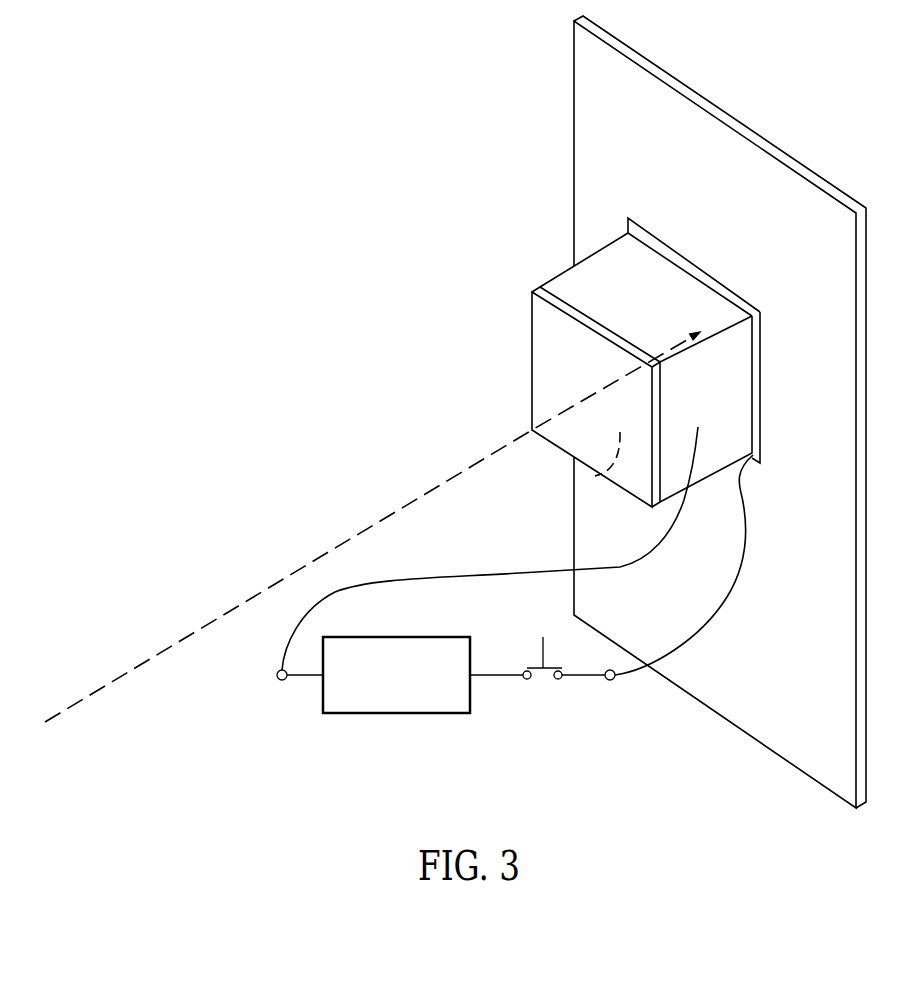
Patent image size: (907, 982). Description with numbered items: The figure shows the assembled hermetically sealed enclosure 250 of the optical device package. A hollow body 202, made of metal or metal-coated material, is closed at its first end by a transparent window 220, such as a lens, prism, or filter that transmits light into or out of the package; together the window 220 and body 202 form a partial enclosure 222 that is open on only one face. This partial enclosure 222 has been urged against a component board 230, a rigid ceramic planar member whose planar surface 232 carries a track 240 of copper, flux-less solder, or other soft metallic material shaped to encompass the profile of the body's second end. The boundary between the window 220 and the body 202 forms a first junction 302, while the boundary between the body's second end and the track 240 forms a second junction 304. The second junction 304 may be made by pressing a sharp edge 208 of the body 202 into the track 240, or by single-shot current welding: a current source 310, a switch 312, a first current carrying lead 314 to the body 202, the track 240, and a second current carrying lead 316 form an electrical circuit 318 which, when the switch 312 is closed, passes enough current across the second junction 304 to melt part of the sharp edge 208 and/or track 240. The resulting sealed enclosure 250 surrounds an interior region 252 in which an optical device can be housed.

The hollow body 202 is at (577, 347).
The sharp edge 208 is at (764, 432).
The window 220 is at (566, 388).
The partial enclosure 222 is at (531, 392).
The component board 230 is at (684, 414).
The planar surface 232 is at (609, 124).
The track 240 is at (687, 255).
The hermetically sealed enclosure 250 is at (552, 347).
The interior region 252 is at (604, 470).
The first junction 302 is at (586, 313).
The second junction 304 is at (720, 295).
The current source 310 is at (398, 637).
The switch 312 is at (558, 626).
The first current carrying lead 314 is at (495, 576).
The second current carrying lead 316 is at (728, 612).
The electrical circuit 318 is at (607, 703).